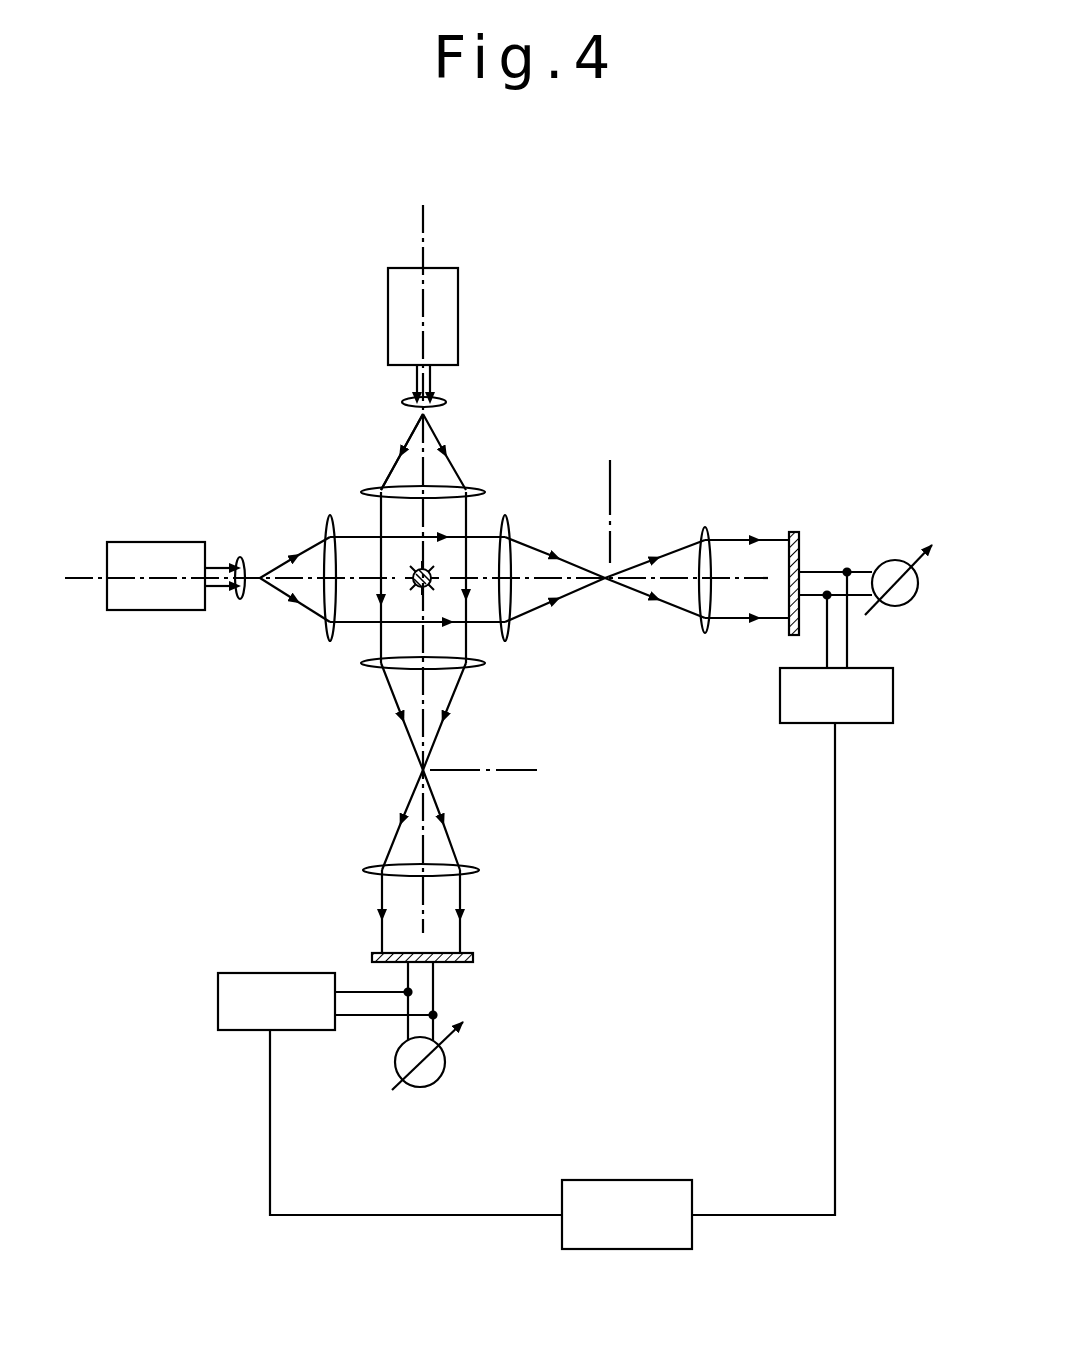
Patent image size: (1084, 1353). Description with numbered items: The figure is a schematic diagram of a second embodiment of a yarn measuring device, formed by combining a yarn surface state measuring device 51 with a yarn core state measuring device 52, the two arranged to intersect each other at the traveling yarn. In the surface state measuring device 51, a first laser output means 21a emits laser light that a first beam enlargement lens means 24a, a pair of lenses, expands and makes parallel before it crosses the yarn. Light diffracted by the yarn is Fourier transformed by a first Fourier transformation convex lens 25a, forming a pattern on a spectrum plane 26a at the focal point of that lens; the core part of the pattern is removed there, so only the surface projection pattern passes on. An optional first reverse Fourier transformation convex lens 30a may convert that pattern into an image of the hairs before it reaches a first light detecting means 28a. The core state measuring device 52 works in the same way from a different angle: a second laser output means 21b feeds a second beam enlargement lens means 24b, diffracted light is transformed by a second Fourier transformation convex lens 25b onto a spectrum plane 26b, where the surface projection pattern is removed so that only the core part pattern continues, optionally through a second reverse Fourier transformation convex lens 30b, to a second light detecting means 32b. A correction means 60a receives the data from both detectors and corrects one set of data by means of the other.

The yarn core state measuring device 52 is at (435, 232).
The yarn surface state measuring device 51 is at (80, 582).
The first laser output means 21a is at (153, 603).
The second laser output means 21b is at (388, 313).
The first beam enlargement lens means 24a is at (330, 518).
The second beam enlargement lens means 24b is at (475, 490).
The first Fourier transformation convex lens 25a is at (508, 532).
The second Fourier transformation convex lens 25b is at (470, 668).
The spectrum plane 26a is at (608, 491).
The spectrum plane 26b is at (521, 778).
The first reverse Fourier transformation convex lens 30a is at (706, 530).
The second reverse Fourier transformation convex lens 30b is at (470, 875).
The first light detecting means 28a is at (846, 536).
The second light detecting means 32b is at (480, 1000).
The correction means 60a is at (632, 1178).